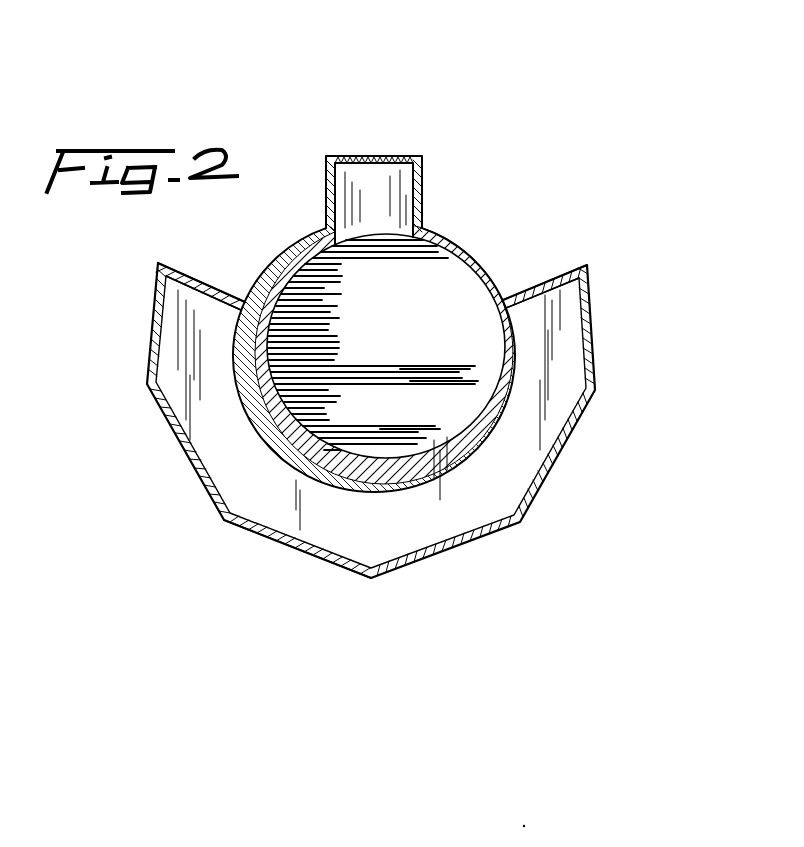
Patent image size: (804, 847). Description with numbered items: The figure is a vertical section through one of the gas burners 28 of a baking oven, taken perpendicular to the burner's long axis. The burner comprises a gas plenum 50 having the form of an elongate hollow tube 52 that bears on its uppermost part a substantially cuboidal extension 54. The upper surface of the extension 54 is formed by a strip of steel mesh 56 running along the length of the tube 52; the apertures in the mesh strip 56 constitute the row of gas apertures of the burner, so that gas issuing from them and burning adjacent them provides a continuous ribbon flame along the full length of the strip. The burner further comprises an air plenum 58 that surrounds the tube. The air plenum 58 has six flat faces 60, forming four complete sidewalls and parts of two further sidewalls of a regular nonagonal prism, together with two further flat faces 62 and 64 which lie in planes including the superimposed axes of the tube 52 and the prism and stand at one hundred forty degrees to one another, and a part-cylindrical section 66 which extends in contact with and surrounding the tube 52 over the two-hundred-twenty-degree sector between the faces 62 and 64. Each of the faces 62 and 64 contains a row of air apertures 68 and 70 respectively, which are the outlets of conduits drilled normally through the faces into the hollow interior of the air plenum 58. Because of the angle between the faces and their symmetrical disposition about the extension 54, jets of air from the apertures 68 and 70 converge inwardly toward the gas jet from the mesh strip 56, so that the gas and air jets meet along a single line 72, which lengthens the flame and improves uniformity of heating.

The gas burner 28 is at (562, 207).
The gas plenum 50 is at (388, 335).
The elongate hollow tube 52 is at (484, 270).
The cuboidal extension 54 is at (412, 168).
The steel mesh strip 56 is at (380, 157).
The air plenum 58 is at (385, 405).
The flat faces 60 is at (151, 340).
The flat face 62 is at (194, 281).
The flat face 64 is at (588, 264).
The part-cylindrical section 66 is at (357, 487).
The air apertures 68 is at (204, 281).
The air apertures 70 is at (557, 290).
The line 72 is at (417, 0).